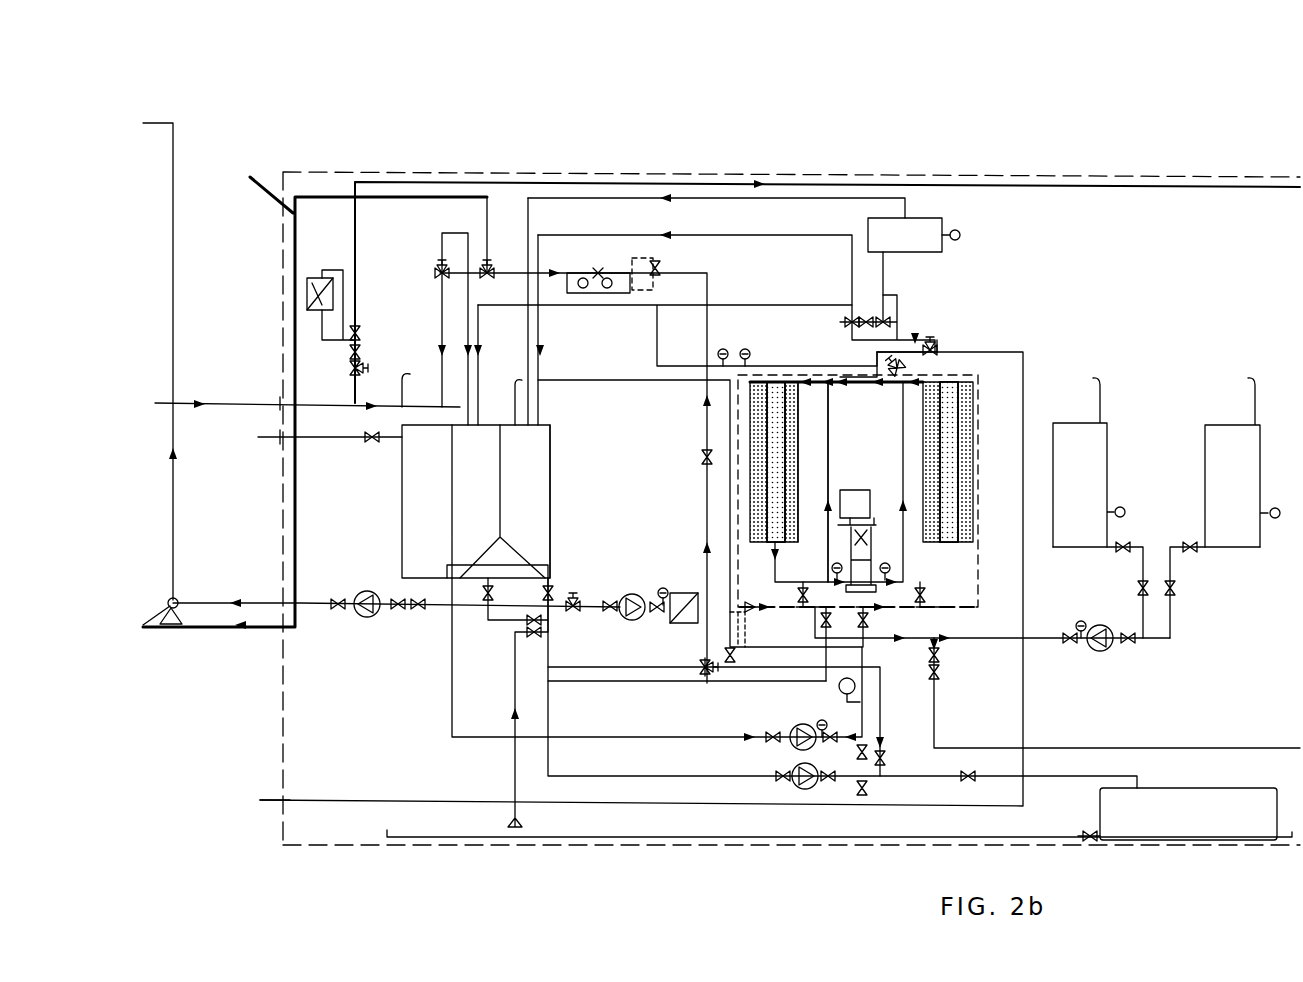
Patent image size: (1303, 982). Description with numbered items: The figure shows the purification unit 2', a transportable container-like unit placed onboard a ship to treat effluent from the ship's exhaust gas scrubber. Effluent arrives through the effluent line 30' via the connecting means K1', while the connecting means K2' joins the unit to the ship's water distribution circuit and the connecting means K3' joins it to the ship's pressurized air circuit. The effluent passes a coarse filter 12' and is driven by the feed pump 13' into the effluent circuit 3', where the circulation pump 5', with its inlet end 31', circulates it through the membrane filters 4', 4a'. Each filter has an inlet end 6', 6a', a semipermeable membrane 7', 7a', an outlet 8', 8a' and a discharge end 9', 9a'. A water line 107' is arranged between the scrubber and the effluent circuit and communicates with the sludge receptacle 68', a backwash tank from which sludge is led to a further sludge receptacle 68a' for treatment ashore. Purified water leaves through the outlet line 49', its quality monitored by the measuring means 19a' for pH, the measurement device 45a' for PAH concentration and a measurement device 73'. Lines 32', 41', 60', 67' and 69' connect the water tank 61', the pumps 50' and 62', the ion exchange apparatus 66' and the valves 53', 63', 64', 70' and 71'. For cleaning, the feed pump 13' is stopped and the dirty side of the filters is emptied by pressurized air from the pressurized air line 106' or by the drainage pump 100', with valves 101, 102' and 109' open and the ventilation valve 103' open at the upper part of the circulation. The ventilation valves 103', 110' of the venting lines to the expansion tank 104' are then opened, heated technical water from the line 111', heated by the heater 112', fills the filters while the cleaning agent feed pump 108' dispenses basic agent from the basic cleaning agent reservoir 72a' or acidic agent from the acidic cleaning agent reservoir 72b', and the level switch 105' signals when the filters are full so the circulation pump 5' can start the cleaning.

The purification unit 2' is at (827, 240).
The effluent circuit 3' is at (686, 536).
The membrane filter 4' is at (906, 380).
The membrane filter 4a' is at (725, 462).
The circulation pump 5' is at (861, 499).
The inlet end of the membrane filter 6' is at (904, 578).
The inlet end of the membrane filter 6a' is at (707, 327).
The semipermeable membrane 7' is at (965, 462).
The semipermeable membrane 7a' is at (710, 462).
The outlet of the membrane filter 8' is at (839, 484).
The outlet of the membrane filter 8a' is at (813, 482).
The discharge end of membrane filter 9' is at (775, 474).
The discharge end of the membrane filter 9a' is at (718, 462).
The coarse filter 12' is at (704, 668).
The feed pump 13' is at (656, 574).
The measuring means for determining pH value of purified effluent 19a' is at (617, 187).
The effluent line 30' is at (436, 524).
The inlet end of the circulation pump 31' is at (900, 660).
The line 32' is at (511, 401).
The line 41' is at (716, 267).
The measurement device for determining PAH concentration 45a' is at (594, 351).
The outlet line 49' is at (381, 353).
The pump 50' is at (355, 647).
The valve 53' is at (408, 651).
The line 60' is at (779, 686).
The water tank 61' is at (441, 501).
The pump 62' is at (749, 817).
The valve 63' is at (691, 820).
The valve 64' is at (831, 823).
The ion exchange apparatus 66' is at (715, 183).
The line 67' is at (695, 221).
The sludge receptacle 68' is at (574, 501).
The sludge receptacle 68a' is at (1177, 778).
The line 69' is at (539, 664).
The valve 70' is at (904, 319).
The valve 71' is at (591, 583).
The basic cleaning agent reservoir 72a' is at (1111, 497).
The acidic cleaning agent reservoir 72b' is at (1222, 472).
The measurement device 73' is at (964, 608).
The drainage pump 100' is at (787, 841).
The valve 101 is at (785, 610).
The valve 102' is at (716, 717).
The ventilation valve 103' is at (987, 305).
The expansion tank 104' is at (930, 219).
The level switch 105' is at (997, 225).
The pressurized air line 106' is at (807, 741).
The water line 107' is at (473, 314).
The cleaning agent feed pump 108' is at (1096, 662).
The valve 109' is at (992, 640).
The ventilation valve 110' is at (895, 323).
The line 111' is at (761, 465).
The heater 112' is at (277, 281).
The connecting means K1' is at (261, 374).
The connecting means K2' is at (246, 459).
The connecting means K3' is at (247, 827).